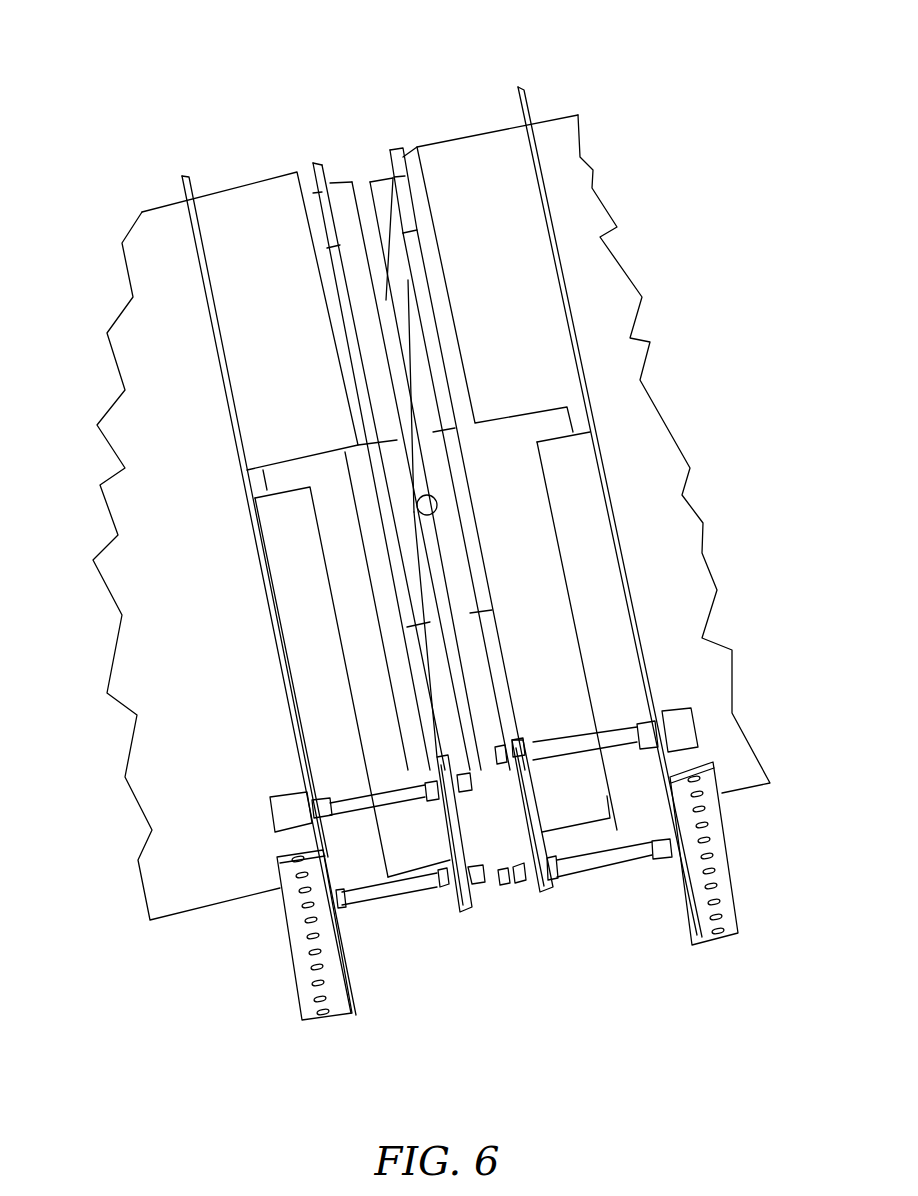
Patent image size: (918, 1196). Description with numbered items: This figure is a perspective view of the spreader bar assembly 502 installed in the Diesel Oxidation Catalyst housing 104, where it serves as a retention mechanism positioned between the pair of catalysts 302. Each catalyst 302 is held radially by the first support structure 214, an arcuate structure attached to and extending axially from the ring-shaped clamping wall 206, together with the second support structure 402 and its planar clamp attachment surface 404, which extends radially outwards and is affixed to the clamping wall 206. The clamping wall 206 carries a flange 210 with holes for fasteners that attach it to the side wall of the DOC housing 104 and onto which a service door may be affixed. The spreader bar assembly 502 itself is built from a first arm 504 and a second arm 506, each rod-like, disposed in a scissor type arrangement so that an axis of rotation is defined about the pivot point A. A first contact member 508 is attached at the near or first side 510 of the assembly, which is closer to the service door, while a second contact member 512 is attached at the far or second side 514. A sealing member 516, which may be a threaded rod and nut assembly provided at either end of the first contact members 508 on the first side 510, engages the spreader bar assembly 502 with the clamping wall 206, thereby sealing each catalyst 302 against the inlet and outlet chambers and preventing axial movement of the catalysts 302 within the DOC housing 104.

The Diesel Oxidation Catalyst housing 104 is at (613, 178).
The clamping wall 206 is at (182, 188).
The flange 210 is at (292, 962).
The first support structure 214 is at (238, 260).
The catalyst 302 is at (297, 473).
The second support structure 402 is at (285, 613).
The clamp attachment surface 404 is at (675, 903).
The spreader bar assembly 502 is at (360, 160).
The first arm 504 is at (345, 203).
The second arm 506 is at (378, 188).
The first contact member 508 is at (472, 895).
The first side 510 is at (512, 1010).
The second contact member 512 is at (314, 178).
The second side 514 is at (302, 155).
The sealing member 516 is at (338, 795).
The pivot point A is at (430, 505).